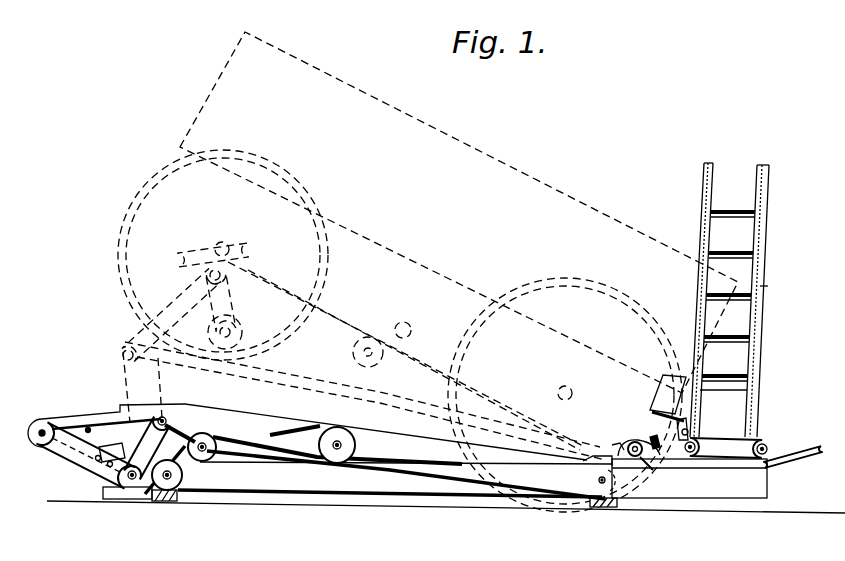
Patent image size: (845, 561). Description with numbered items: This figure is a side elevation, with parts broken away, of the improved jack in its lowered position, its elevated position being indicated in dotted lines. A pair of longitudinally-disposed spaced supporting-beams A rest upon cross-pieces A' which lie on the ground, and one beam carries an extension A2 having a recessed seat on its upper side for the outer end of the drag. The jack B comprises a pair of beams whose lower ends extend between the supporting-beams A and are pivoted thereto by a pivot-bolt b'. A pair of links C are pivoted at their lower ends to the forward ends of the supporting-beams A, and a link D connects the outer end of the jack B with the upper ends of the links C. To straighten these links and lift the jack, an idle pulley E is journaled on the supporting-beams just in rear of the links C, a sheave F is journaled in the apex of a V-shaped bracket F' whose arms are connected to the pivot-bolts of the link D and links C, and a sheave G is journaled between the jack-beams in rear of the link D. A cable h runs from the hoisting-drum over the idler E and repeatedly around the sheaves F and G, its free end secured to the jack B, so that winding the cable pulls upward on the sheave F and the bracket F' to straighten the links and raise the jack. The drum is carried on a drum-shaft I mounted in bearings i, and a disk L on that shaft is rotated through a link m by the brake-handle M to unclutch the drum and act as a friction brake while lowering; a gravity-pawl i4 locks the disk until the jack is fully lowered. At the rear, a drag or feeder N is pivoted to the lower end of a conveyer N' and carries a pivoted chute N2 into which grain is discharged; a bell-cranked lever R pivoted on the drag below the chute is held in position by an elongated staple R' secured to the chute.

The supporting-beams A is at (395, 479).
The cross-pieces A' is at (384, 514).
The extension A2 is at (689, 478).
The jack B is at (410, 448).
The links C is at (58, 457).
The link D is at (100, 423).
The idle pulley E is at (212, 460).
The sheave F is at (150, 382).
The V-shaped bracket F' is at (144, 485).
The sheave G is at (345, 432).
The cable h is at (268, 434).
The drag or feeder N is at (738, 300).
The conveyer N' is at (780, 292).
The pivoted chute N2 is at (694, 398).
The brake-handle M is at (810, 444).
The bell-cranked lever R is at (650, 398).
The elongated staple R' is at (702, 426).
The bearings i is at (628, 440).
The stud i4 is at (616, 446).
The disk L is at (630, 441).
The link m is at (657, 432).
The drum-shaft I is at (645, 468).
The pivot-bolt b' is at (599, 481).